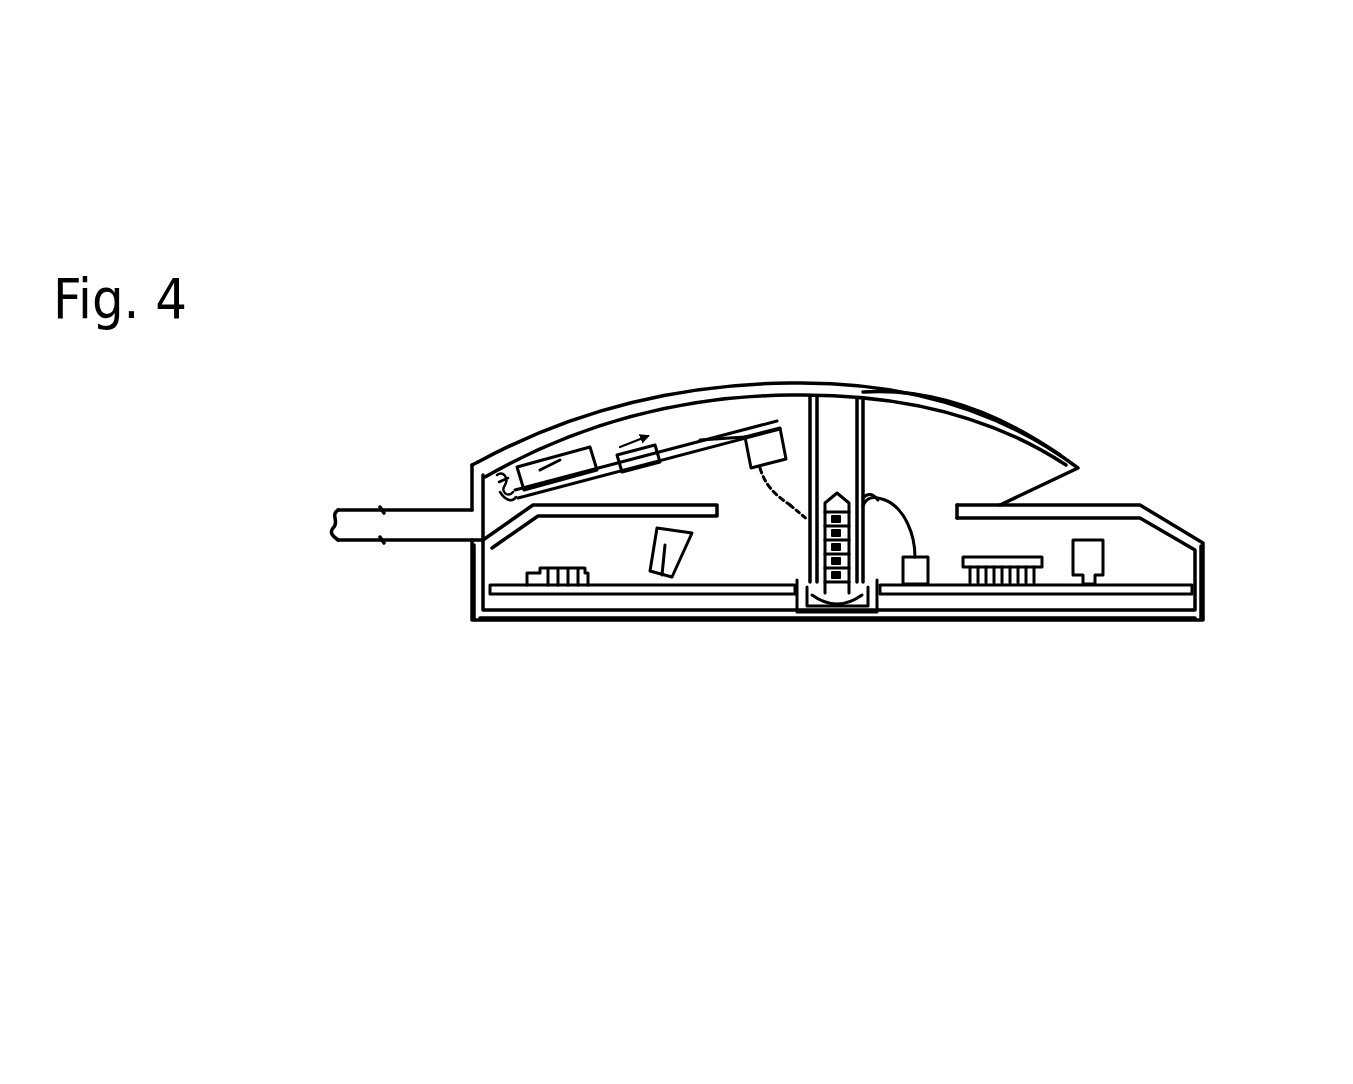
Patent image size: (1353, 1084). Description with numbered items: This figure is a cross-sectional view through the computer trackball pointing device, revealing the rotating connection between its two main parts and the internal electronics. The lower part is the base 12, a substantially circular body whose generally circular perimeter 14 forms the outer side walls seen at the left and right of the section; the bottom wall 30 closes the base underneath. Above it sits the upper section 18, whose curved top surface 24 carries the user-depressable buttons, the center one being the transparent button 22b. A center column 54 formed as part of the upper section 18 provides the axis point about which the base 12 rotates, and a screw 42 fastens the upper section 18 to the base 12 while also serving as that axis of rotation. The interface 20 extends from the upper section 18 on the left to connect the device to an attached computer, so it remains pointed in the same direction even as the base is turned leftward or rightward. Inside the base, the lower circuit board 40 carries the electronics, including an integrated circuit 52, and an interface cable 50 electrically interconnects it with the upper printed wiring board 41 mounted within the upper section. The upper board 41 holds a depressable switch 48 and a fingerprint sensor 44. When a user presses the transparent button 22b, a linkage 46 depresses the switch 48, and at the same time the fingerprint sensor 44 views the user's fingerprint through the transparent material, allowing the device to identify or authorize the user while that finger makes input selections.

The base 12 is at (1177, 622).
The perimeter 14 is at (465, 586).
The upper section 18 is at (875, 390).
The interface 20 is at (388, 545).
The user-depressable button 22b is at (535, 427).
The top surface 24 is at (947, 397).
The bottom wall 30 is at (952, 628).
The lower circuit board 40 is at (620, 596).
The upper printed wiring board 41 is at (743, 443).
The screw 42 is at (827, 622).
The fingerprint sensor 44 is at (517, 447).
The linkage 46 is at (632, 418).
The depressable switch 48 is at (700, 440).
The interface cable 50 is at (908, 500).
The integrated circuit 52 is at (1027, 557).
The center column 54 is at (838, 440).